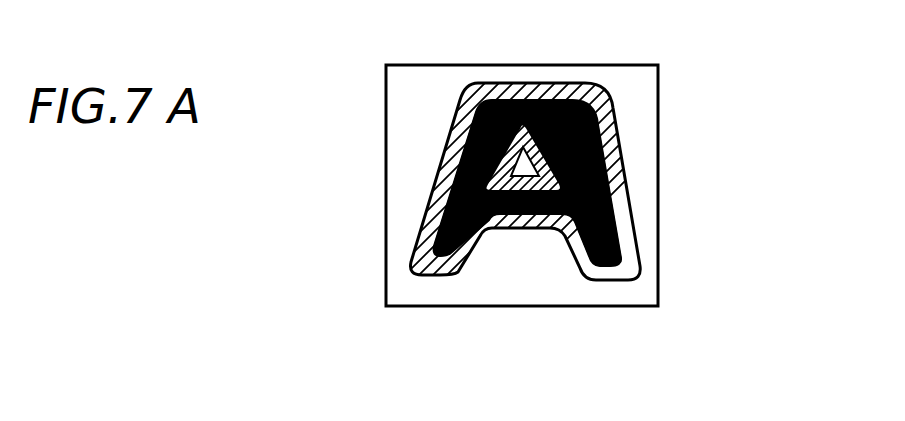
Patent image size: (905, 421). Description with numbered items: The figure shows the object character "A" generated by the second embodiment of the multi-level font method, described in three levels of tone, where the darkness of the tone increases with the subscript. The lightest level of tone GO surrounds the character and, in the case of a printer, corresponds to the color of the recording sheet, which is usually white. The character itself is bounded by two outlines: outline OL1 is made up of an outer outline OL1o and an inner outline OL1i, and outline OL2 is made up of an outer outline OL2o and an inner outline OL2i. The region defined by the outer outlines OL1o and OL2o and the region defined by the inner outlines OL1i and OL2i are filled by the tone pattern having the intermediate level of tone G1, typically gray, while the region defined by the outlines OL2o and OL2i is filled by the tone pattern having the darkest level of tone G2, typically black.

The level of tone G0 GO is at (553, 285).
The level of tone G1 is at (636, 268).
The level of tone G2 is at (456, 183).
The outer outline OL1o is at (614, 105).
The inner outline OL1i is at (577, 84).
The outer outline OL2o is at (605, 163).
The inner outline OL2i is at (612, 203).